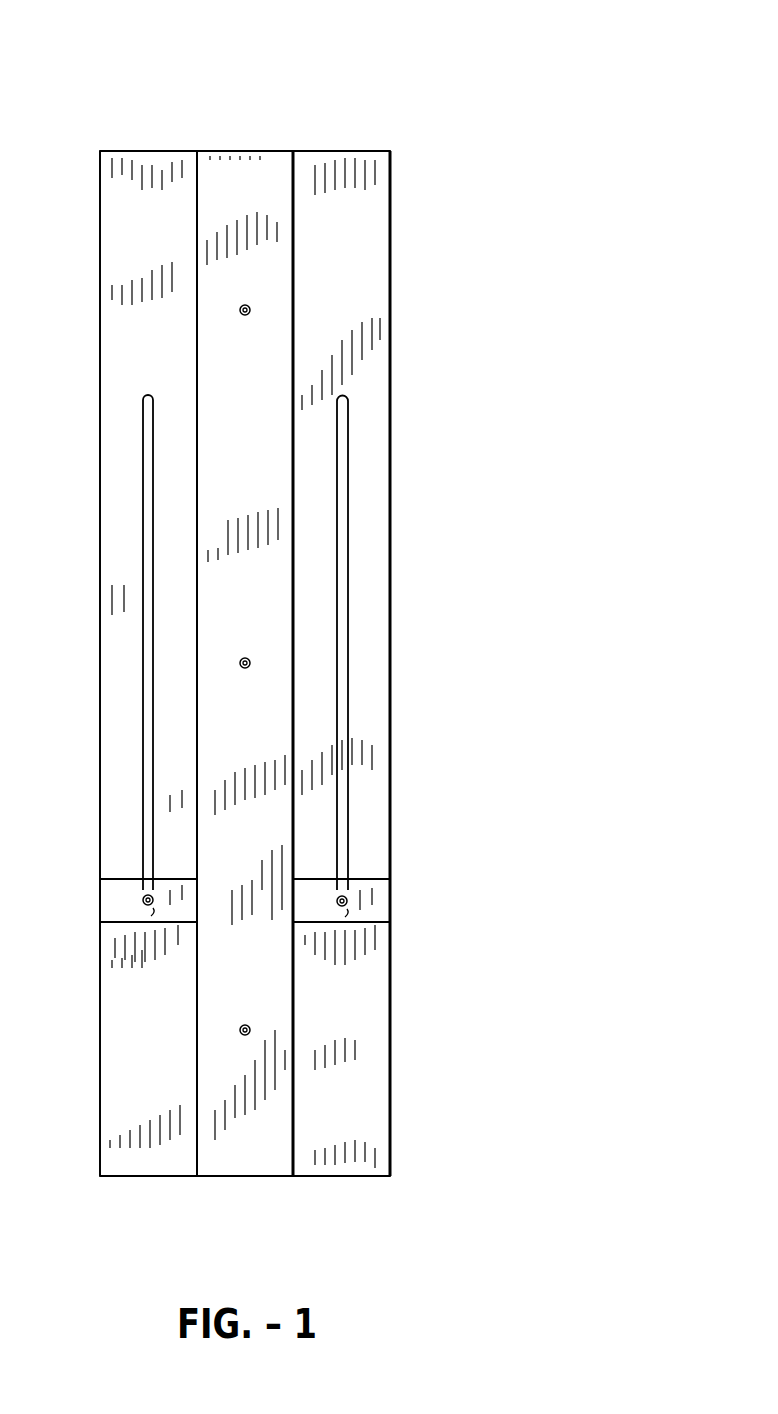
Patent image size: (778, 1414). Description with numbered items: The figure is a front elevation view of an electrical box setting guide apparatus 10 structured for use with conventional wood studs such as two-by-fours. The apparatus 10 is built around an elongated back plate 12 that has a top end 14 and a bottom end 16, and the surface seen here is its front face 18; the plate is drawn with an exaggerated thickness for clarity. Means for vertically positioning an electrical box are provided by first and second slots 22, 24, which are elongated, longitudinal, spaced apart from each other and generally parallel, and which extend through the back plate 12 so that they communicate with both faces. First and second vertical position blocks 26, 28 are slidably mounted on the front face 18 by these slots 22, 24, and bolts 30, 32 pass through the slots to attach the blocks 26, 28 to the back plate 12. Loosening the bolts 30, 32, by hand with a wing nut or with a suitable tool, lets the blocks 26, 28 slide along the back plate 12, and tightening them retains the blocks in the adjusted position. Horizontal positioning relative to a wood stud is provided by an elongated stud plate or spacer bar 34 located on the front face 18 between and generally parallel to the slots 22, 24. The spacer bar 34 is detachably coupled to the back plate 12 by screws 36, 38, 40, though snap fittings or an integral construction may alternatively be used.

The electrical box setting guide apparatus 10 is at (382, 88).
The back plate 12 is at (391, 225).
The top end 14 is at (185, 141).
The bottom end 16 is at (147, 1195).
The front face 18 is at (128, 252).
The first slot 22 is at (148, 480).
The second slot 24 is at (343, 733).
The first vertical position block 26 is at (117, 883).
The second vertical position block 28 is at (370, 913).
The bolt 30 is at (146, 905).
The bolt 32 is at (345, 897).
The spacer bar 34 is at (264, 172).
The screw 36 is at (247, 305).
The screw 38 is at (243, 660).
The screw 40 is at (249, 1034).